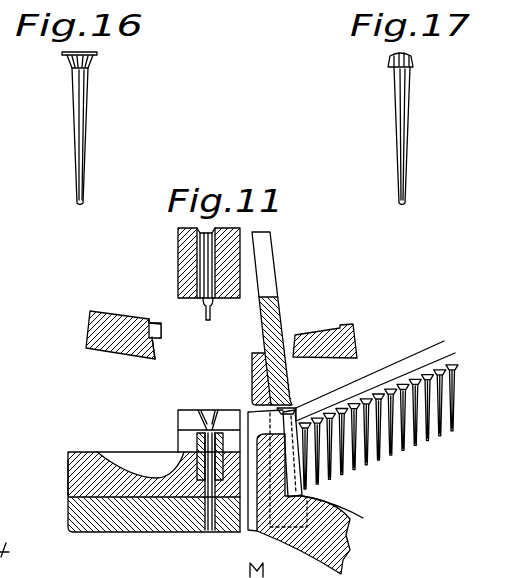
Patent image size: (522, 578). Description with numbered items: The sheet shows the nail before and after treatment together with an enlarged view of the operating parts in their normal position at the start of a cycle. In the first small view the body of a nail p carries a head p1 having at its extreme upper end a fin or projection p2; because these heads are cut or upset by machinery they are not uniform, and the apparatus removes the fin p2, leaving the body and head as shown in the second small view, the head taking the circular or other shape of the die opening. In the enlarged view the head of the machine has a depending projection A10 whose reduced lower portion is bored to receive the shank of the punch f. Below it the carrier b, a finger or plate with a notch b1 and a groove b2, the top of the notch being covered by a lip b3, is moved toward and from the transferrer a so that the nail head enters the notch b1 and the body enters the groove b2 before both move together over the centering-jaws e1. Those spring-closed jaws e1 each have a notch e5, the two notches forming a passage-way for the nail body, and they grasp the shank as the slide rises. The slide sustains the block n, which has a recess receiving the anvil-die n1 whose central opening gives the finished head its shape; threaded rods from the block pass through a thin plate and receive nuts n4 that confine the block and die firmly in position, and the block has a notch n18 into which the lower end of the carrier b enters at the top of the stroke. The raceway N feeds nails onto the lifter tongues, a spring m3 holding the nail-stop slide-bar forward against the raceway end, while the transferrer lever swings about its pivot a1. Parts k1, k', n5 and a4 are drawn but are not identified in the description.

In FIG. 16, the nail body p is at (77, 136).
In FIG. 17, the nail body p is at (398, 145).
In FIG. 11, the nail body p is at (367, 460).
In FIG. 16, the nail head p1 is at (68, 57).
In FIG. 17, the nail head p1 is at (390, 62).
In FIG. 16, the fin p2 is at (94, 54).
In FIG. 11, the depending projection A10 is at (178, 242).
In FIG. 11, the punch f is at (209, 277).
In FIG. 11, the carrier b is at (88, 333).
In FIG. 11, the notch b1 is at (161, 332).
In FIG. 11, the groove b2 is at (155, 353).
In FIG. 11, the lip b3 is at (155, 322).
In FIG. 11, the lever arm k1 is at (278, 311).
In FIG. 11, the lever foot k' is at (285, 379).
In FIG. 11, the transferrer a is at (343, 331).
In FIG. 11, the raceway N is at (375, 374).
In FIG. 11, the nut n4 is at (304, 496).
In FIG. 11, the spring m3 is at (352, 548).
In FIG. 11, the thin wall n5 is at (250, 527).
In FIG. 11, the block n is at (88, 473).
In FIG. 11, the notch n18 is at (68, 483).
In FIG. 11, the pivot a1 is at (133, 518).
In FIG. 11, the nail tube a4 is at (205, 514).
In FIG. 11, the nail-centering jaws e1 is at (178, 412).
In FIG. 11, the notch e5 is at (210, 410).
In FIG. 11, the anvil-die n1 is at (198, 438).